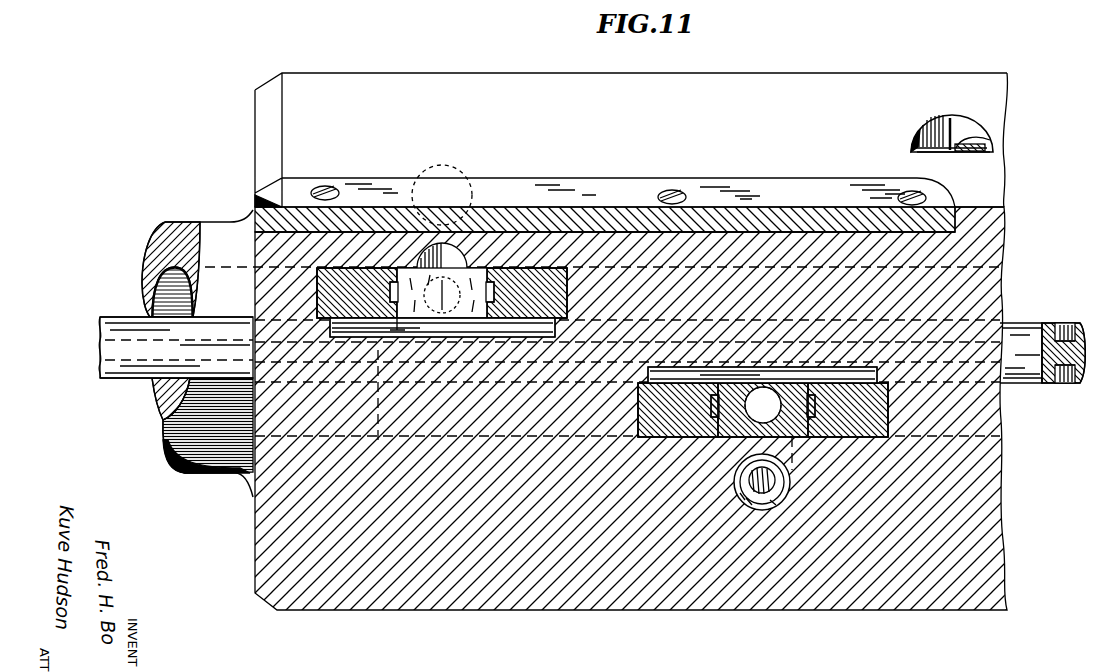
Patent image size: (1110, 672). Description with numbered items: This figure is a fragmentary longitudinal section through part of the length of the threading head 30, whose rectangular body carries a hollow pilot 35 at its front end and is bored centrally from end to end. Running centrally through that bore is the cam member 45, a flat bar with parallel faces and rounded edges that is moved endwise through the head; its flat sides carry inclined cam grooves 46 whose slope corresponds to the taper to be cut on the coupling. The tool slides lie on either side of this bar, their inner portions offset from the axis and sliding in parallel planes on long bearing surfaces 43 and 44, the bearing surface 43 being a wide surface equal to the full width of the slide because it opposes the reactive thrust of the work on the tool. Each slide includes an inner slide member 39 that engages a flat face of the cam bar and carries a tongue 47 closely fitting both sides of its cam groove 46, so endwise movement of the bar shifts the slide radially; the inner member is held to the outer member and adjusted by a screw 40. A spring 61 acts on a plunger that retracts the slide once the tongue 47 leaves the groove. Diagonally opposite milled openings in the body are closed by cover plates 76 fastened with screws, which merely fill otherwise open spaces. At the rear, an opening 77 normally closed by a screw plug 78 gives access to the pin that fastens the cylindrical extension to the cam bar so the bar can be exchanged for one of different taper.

The threading head 30 is at (475, 603).
The hollow pilot 35 is at (194, 470).
The inner slide member 39 is at (465, 270).
The screw 40 is at (813, 417).
The bearing surface 43 is at (513, 268).
The bearing surface 44 is at (558, 328).
The cam member 45 is at (130, 376).
The cam grooves 46 is at (1068, 322).
The tongues 47 is at (397, 335).
The spring 61 is at (762, 500).
The cover plates 76 is at (380, 199).
The opening 77 is at (963, 133).
The screw plug 78 is at (972, 149).